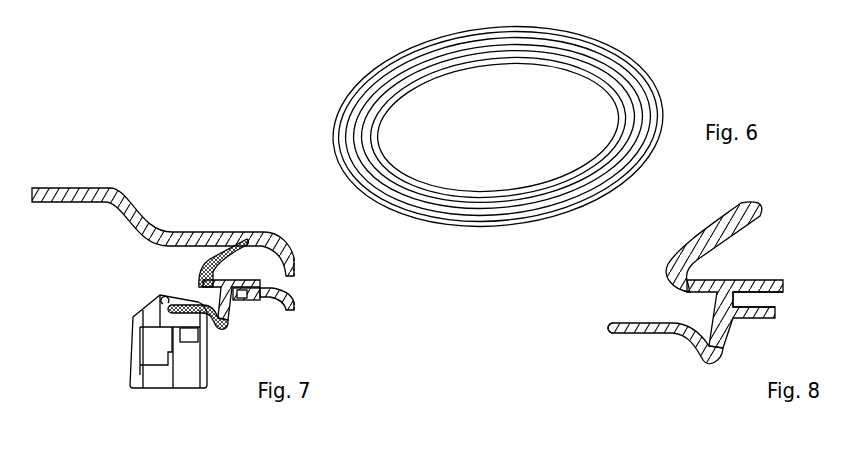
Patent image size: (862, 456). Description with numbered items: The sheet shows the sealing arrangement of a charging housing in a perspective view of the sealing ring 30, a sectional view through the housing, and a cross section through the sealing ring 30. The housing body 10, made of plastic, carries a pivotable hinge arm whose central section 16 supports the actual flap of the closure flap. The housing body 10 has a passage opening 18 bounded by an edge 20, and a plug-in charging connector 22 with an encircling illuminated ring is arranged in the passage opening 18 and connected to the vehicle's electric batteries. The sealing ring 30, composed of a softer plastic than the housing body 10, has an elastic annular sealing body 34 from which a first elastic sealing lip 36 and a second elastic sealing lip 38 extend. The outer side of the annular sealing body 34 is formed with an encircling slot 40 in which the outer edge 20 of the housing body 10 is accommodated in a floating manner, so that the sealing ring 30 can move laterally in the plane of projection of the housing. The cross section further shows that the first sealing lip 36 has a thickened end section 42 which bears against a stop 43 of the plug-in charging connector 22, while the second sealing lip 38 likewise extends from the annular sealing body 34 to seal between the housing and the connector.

In FIG. 7, the housing body 10 is at (285, 313).
In FIG. 7, the central section 16 is at (92, 192).
In FIG. 7, the passage opening 18 is at (65, 340).
In FIG. 7, the edge 20 is at (247, 306).
In FIG. 7, the plug-in charging connector 22 is at (155, 380).
In FIG. 6, the sealing ring 30 is at (462, 220).
In FIG. 7, the annular sealing body 34 is at (227, 277).
In FIG. 8, the annular sealing body 34 is at (733, 285).
In FIG. 7, the first elastic sealing lip 36 is at (187, 303).
In FIG. 8, the first elastic sealing lip 36 is at (676, 333).
In FIG. 7, the second elastic sealing lip 38 is at (215, 253).
In FIG. 8, the second elastic sealing lip 38 is at (713, 228).
In FIG. 8, the encircling slot 40 is at (763, 297).
In FIG. 8, the thickened end section 42 is at (612, 330).
In FIG. 7, the stop 43 is at (163, 300).